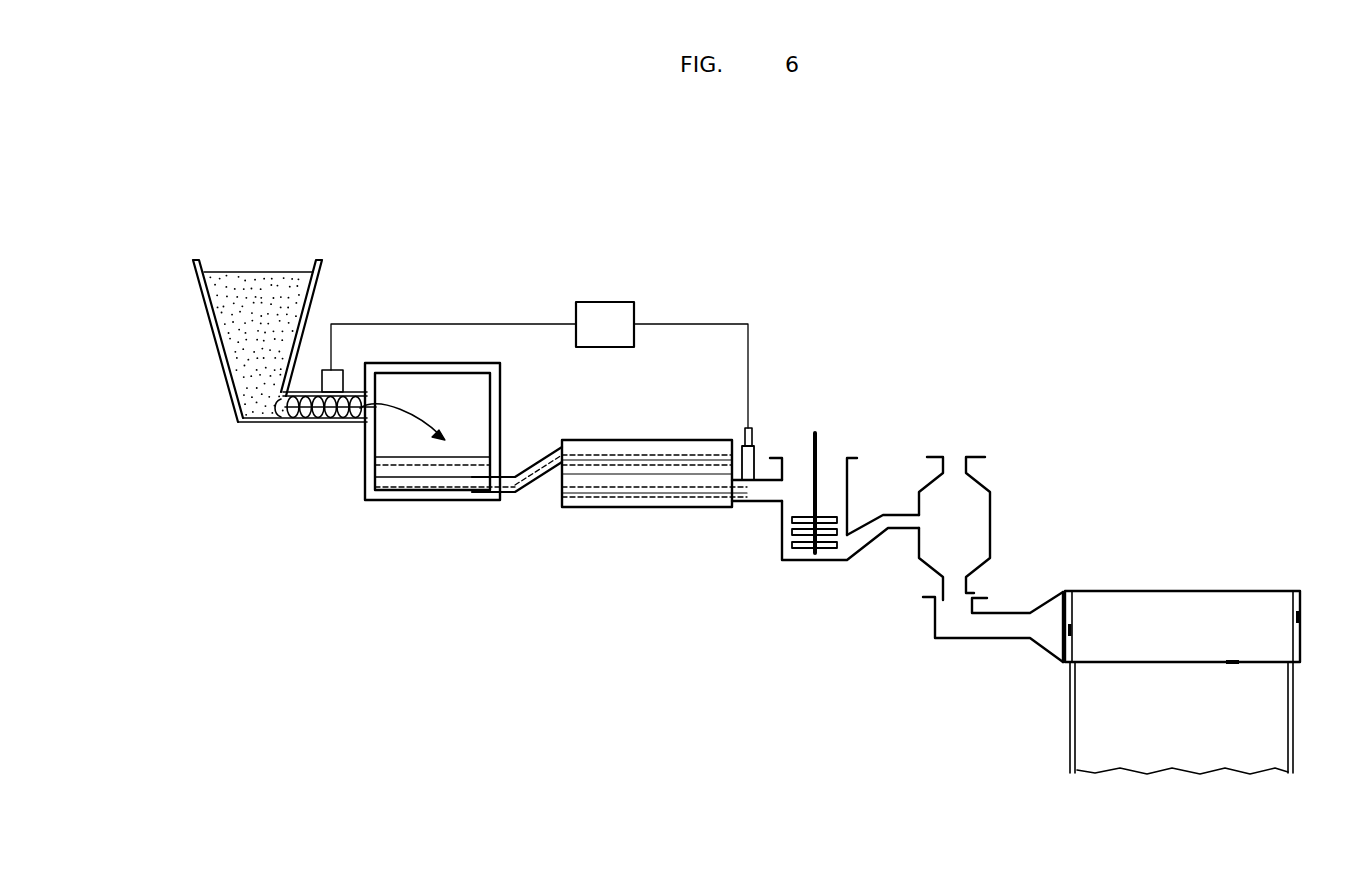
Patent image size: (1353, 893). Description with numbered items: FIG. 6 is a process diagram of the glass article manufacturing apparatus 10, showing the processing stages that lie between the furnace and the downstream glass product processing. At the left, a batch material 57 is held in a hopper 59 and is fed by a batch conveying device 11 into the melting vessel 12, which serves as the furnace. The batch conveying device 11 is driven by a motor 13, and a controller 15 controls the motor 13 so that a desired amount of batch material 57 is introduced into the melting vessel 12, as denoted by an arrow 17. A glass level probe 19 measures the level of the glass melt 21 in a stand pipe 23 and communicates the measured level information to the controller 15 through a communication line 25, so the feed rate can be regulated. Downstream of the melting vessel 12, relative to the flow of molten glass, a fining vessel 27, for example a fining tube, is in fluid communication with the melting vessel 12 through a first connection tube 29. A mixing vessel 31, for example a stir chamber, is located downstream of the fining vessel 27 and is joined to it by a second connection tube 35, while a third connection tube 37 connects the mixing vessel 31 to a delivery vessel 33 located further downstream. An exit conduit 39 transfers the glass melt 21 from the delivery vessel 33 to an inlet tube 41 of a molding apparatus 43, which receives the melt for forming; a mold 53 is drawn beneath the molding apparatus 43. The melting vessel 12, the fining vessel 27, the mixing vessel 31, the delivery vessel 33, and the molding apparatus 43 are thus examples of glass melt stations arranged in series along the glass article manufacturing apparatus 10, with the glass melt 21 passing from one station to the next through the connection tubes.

The glass article manufacturing apparatus 10 is at (1162, 226).
The batch conveying device 11 is at (310, 412).
The melting vessel 12 is at (365, 490).
The motor 13 is at (336, 368).
The controller 15 is at (604, 302).
The arrow 17 is at (398, 408).
The glass level probe 19 is at (745, 428).
The glass melt 21 is at (470, 456).
The stand pipe 23 is at (760, 455).
The communication line 25 is at (686, 324).
The fining vessel 27 is at (640, 440).
The first connection tube 29 is at (533, 461).
The mixing vessel 31 is at (857, 482).
The delivery vessel 33 is at (992, 500).
The second connection tube 35 is at (762, 503).
The third connection tube 37 is at (873, 541).
The exit conduit 39 is at (972, 590).
The inlet tube 41 is at (930, 616).
The molding apparatus 43 is at (1222, 592).
The mold 53 is at (1090, 748).
The batch material 57 is at (250, 272).
The hopper 59 is at (214, 345).